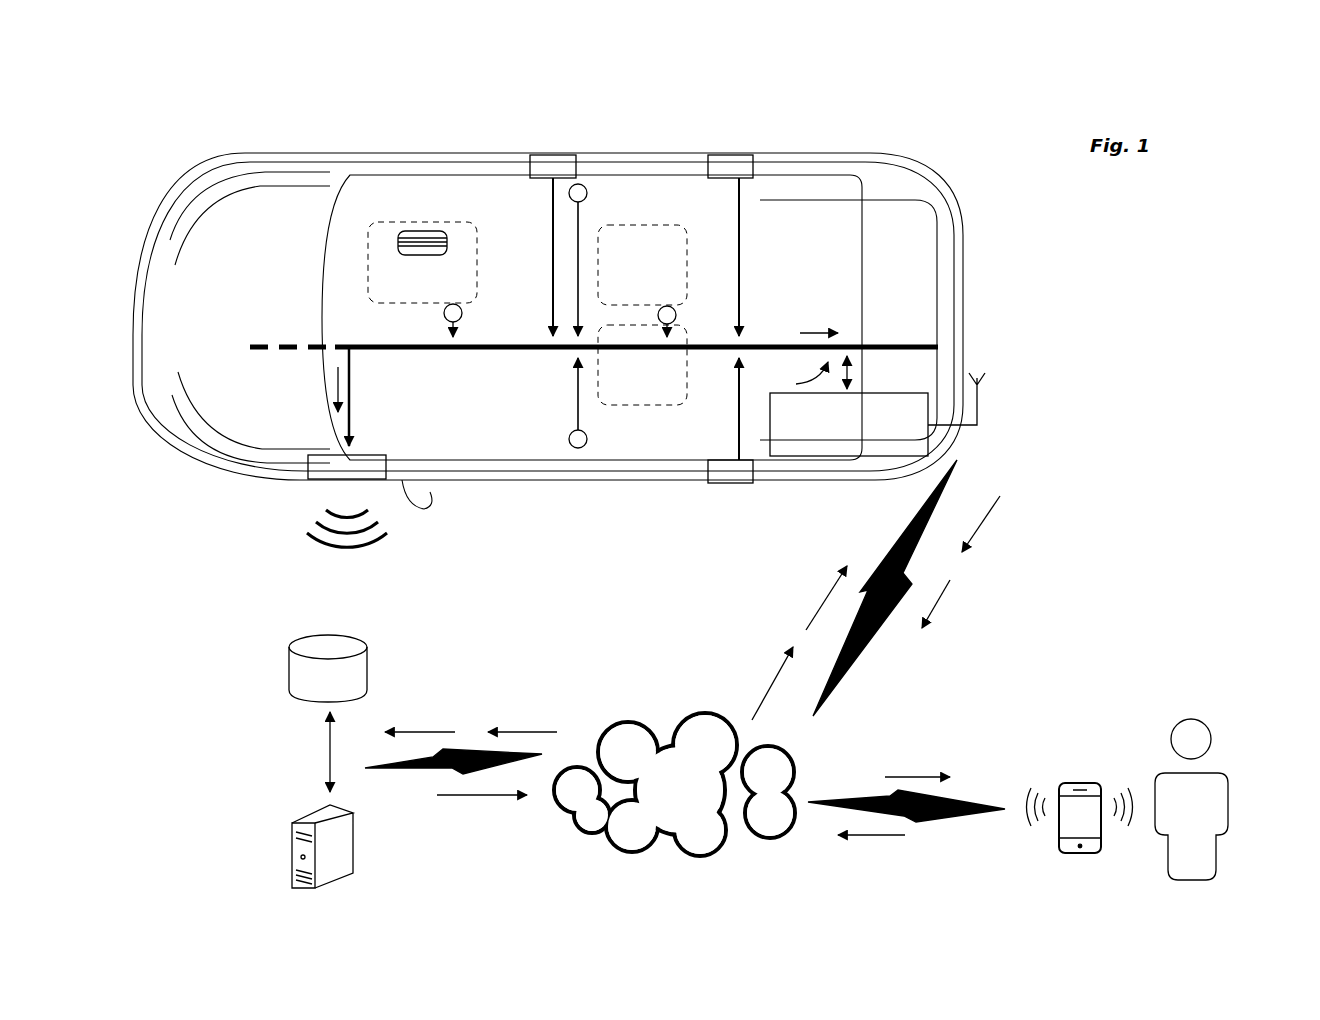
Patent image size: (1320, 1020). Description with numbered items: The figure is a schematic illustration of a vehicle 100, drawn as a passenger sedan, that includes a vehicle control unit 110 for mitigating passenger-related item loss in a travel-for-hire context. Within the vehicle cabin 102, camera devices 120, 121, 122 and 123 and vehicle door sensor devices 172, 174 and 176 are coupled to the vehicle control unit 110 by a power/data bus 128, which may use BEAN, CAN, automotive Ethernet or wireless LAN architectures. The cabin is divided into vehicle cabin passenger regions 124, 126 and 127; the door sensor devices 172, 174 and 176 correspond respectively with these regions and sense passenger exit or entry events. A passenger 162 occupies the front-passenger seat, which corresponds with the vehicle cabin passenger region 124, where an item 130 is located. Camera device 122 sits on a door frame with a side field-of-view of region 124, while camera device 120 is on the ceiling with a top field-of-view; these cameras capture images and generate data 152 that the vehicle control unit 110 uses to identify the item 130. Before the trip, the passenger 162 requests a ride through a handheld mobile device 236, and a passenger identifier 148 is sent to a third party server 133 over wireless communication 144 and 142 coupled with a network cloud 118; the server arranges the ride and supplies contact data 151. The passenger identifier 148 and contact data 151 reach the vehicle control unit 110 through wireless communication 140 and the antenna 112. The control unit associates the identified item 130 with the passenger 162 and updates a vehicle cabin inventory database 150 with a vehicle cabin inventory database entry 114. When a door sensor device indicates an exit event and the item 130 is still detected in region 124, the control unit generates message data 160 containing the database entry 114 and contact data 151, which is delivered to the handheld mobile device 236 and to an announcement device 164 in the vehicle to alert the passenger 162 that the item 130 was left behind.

The vehicle 100 is at (213, 133).
The vehicle cabin 102 is at (533, 308).
The vehicle control unit 110 is at (887, 444).
The antenna 112 is at (960, 426).
The vehicle cabin inventory database entry 114 is at (930, 616).
The network cloud 118 is at (728, 808).
The camera device 120 is at (445, 308).
The camera device 121 is at (676, 310).
The camera device 122 is at (585, 188).
The camera device 123 is at (569, 447).
The vehicle cabin passenger region 124 is at (474, 222).
The vehicle cabin passenger region 126 is at (648, 222).
The vehicle cabin passenger region 127 is at (640, 406).
The power/data bus 128 is at (528, 350).
The item 130 is at (422, 228).
The third party server 133 is at (292, 838).
The wireless communication 140 is at (836, 690).
The wireless communication 142 is at (404, 773).
The wireless communication 144 is at (955, 812).
The passenger identifier 148 is at (816, 612).
The vehicle cabin inventory database 150 is at (290, 665).
The contact data 151 is at (778, 690).
The data 152 is at (815, 333).
The message data 160 is at (1012, 520).
The passenger 162 is at (1198, 718).
The announcement device 164 is at (322, 480).
The vehicle door sensor device 172 is at (545, 155).
The vehicle door sensor device 174 is at (753, 160).
The vehicle door sensor device 176 is at (753, 468).
The handheld mobile device 236 is at (1088, 783).